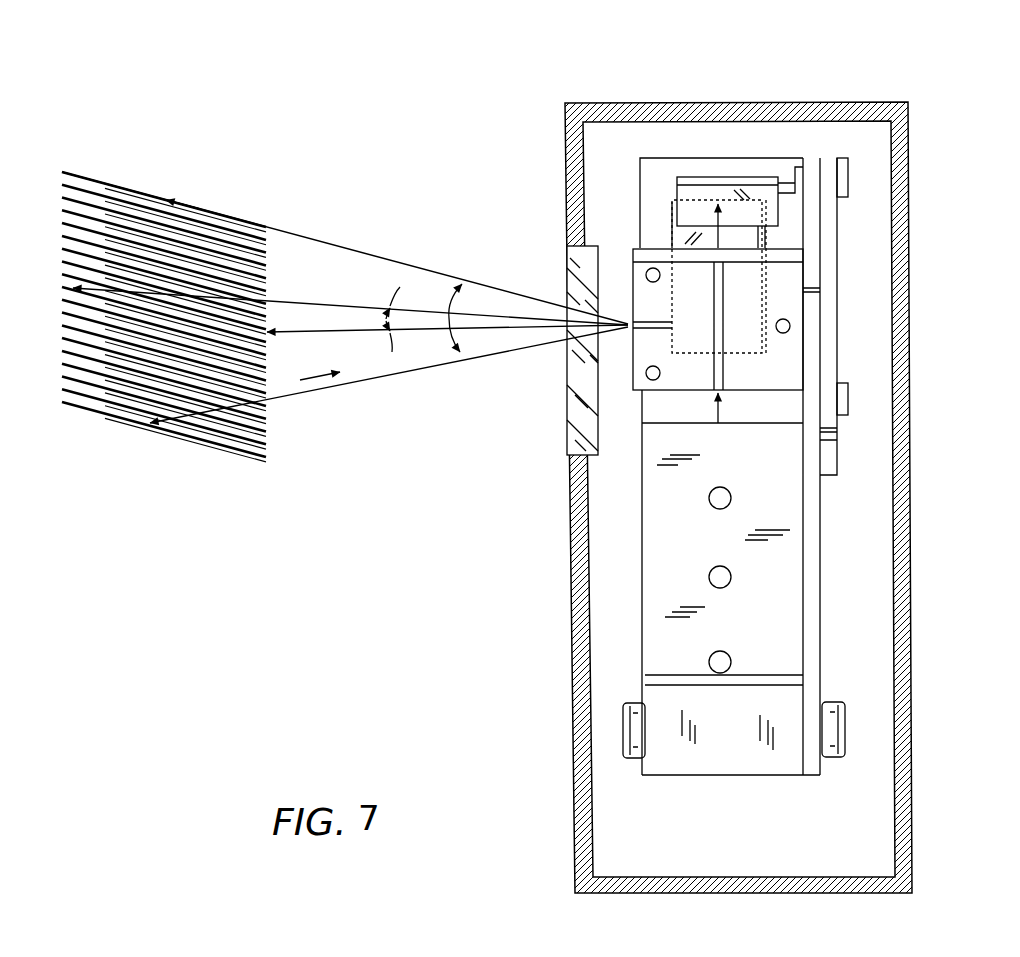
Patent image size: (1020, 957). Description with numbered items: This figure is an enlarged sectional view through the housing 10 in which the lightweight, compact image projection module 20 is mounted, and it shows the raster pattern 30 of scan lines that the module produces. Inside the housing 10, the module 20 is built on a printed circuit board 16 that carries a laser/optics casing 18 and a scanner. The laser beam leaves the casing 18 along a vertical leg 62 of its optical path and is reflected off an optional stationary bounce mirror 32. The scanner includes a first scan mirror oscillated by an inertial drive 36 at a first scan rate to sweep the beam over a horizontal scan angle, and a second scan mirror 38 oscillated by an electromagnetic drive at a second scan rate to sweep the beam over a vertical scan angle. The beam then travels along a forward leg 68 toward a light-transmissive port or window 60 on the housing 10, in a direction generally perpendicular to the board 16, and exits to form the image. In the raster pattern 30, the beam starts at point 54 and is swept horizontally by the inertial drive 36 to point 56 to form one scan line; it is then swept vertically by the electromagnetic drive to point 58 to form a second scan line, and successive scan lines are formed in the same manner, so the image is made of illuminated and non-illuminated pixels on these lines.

The housing 10 is at (879, 102).
The printed circuit board 16 is at (817, 602).
The laser/optics casing 18 is at (644, 605).
The image projection module 20 is at (784, 781).
The raster pattern 30 is at (294, 128).
The bounce mirror 32 is at (685, 192).
The inertial drive 36 is at (782, 350).
The second scan mirror 38 is at (672, 237).
The starting point 54 is at (263, 228).
The end point of scan line 56 is at (62, 172).
The point of second scan line 58 is at (268, 240).
The window 60 is at (577, 303).
The vertical leg 62 is at (720, 412).
The forward leg 68 is at (347, 385).